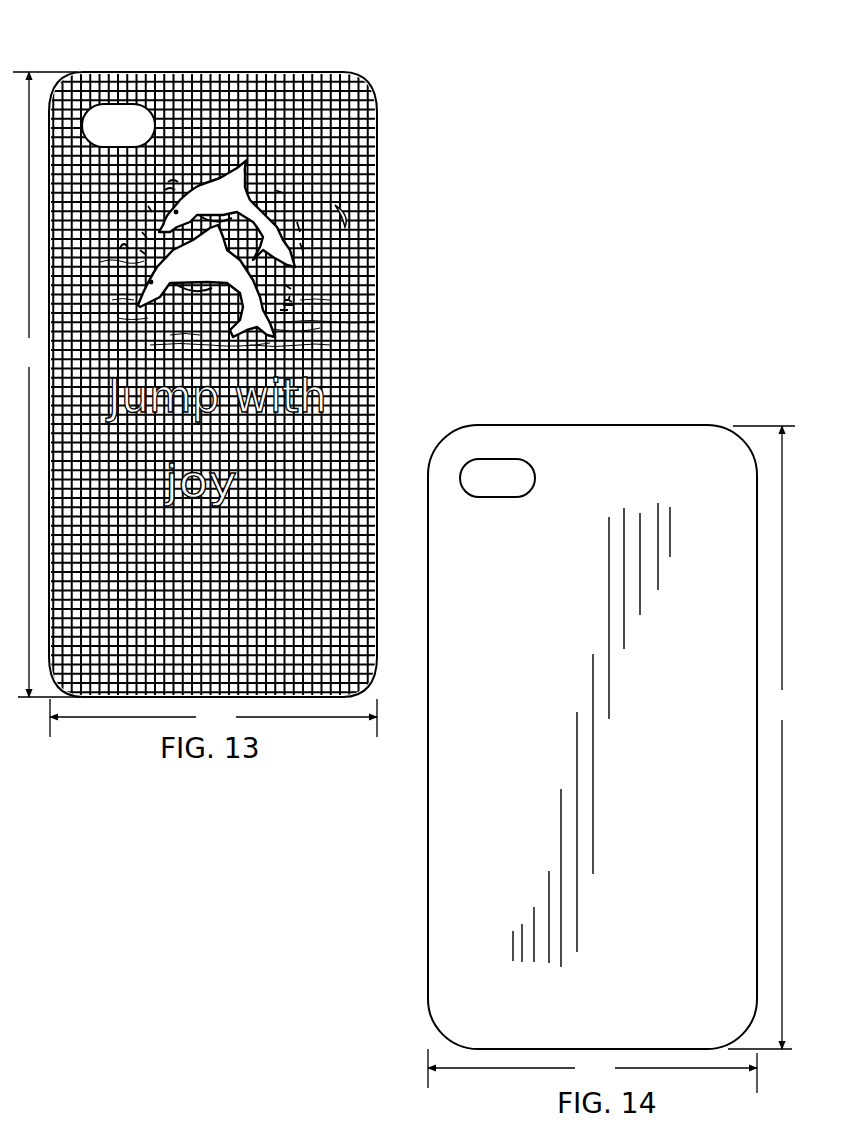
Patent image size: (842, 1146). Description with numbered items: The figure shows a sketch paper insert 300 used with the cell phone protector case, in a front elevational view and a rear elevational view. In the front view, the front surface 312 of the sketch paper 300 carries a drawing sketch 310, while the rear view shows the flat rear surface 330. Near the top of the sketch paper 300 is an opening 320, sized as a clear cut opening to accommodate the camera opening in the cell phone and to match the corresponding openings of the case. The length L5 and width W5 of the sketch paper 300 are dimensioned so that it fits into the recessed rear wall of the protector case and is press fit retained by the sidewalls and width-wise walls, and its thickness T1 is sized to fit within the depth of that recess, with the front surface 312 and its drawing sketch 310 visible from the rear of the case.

In FIG. 13, the sketch paper insert 300 is at (437, 281).
In FIG. 14, the sketch paper insert 300 is at (392, 798).
In FIG. 13, the drawing sketch 310 is at (257, 200).
In FIG. 13, the front surface 312 is at (337, 250).
In FIG. 13, the opening 320 is at (120, 127).
In FIG. 14, the opening 320 is at (497, 480).
In FIG. 14, the flat rear surface 330 is at (620, 490).
In FIG. 13, the thickness T1 is at (398, 373).
In FIG. 13, the length L5 is at (46, 384).
In FIG. 14, the length L5 is at (762, 737).
In FIG. 13, the width W5 is at (213, 718).
In FIG. 14, the width W5 is at (592, 1071).